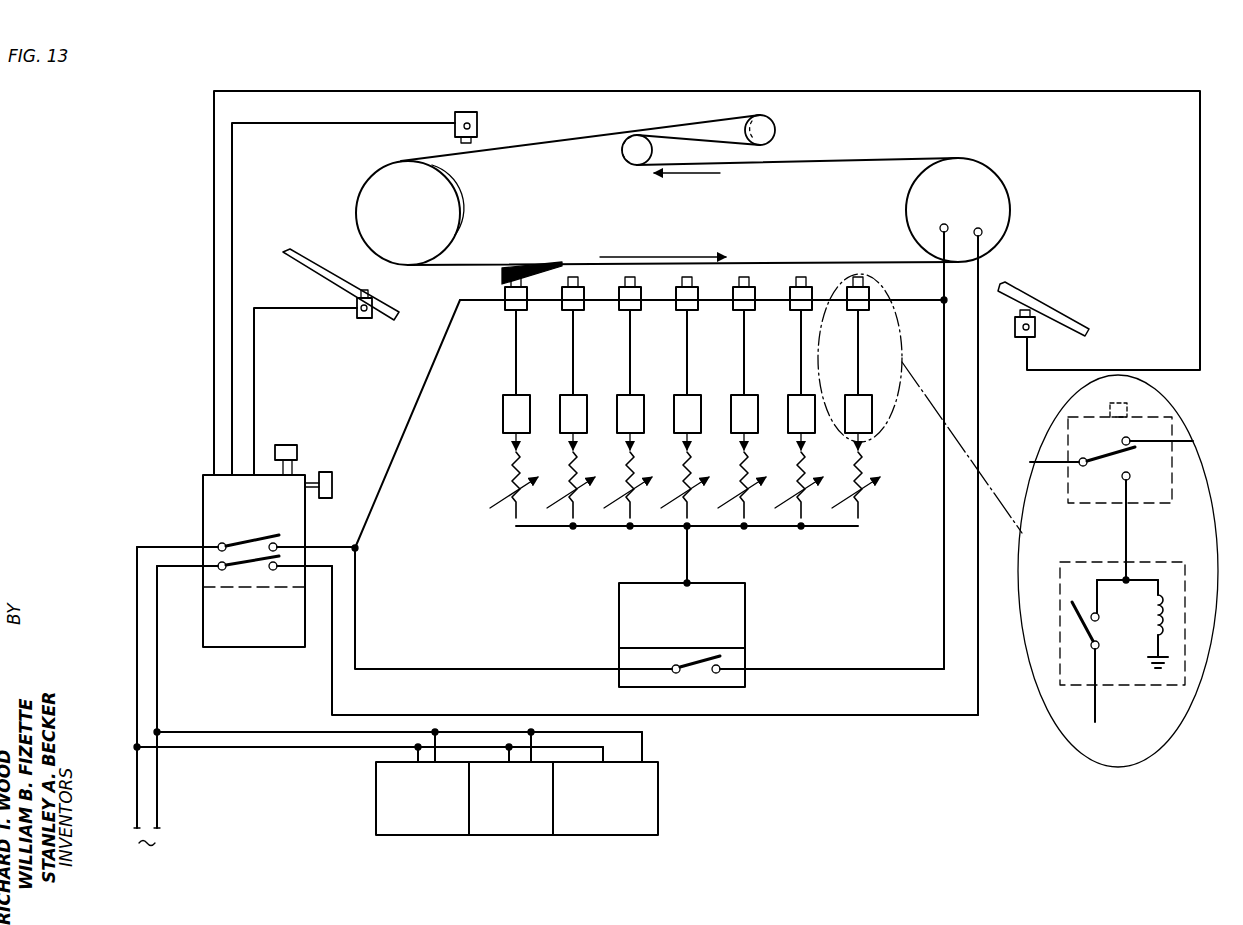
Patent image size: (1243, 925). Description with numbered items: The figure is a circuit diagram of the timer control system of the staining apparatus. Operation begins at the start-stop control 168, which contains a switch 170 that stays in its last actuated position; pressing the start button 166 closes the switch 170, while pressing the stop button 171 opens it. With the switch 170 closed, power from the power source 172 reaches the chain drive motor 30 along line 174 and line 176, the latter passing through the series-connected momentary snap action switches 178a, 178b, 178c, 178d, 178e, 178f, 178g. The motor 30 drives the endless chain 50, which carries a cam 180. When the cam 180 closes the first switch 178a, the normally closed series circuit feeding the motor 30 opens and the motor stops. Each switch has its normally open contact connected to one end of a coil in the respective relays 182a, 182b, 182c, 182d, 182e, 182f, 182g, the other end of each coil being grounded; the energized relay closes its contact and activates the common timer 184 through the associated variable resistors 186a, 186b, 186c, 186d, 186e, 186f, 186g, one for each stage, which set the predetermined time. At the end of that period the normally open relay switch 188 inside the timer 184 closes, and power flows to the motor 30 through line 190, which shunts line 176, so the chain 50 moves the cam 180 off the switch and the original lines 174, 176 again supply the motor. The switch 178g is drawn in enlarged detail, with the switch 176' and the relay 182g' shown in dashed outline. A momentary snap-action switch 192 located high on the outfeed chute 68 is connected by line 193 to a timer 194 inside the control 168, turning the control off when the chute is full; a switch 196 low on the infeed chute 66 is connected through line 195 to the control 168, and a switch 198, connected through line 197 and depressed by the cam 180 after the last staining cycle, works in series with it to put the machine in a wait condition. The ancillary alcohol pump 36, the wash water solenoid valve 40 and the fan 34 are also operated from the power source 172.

The line 193 is at (990, 98).
The line 197 is at (267, 128).
The momentary snap-action switch 198 is at (452, 134).
The endless chain 50 is at (848, 136).
The chain drive motor 30 is at (1012, 203).
The infeed chute 66 is at (312, 280).
The momentary snap-action switch 196 is at (360, 320).
The line 195 is at (254, 384).
The outfeed chute 68 is at (1082, 292).
The momentary snap-action switch 192 is at (1015, 338).
The cam 180 is at (500, 276).
The line 176 is at (649, 426).
The momentary snap action switch 178a is at (508, 314).
The momentary snap action switch 178b is at (566, 312).
The momentary snap action switch 178c is at (620, 310).
The momentary snap action switch 178d is at (678, 310).
The momentary snap action switch 178e is at (736, 310).
The momentary snap action switch 178f is at (794, 310).
The momentary snap action switch 178g is at (854, 310).
The relay 182a is at (512, 388).
The relay 182b is at (570, 388).
The relay 182c is at (627, 388).
The relay 182d is at (684, 388).
The relay 182e is at (741, 388).
The relay 182f is at (798, 388).
The relay 182g is at (845, 371).
The variable resistor 186a is at (492, 506).
The variable resistor 186b is at (555, 481).
The variable resistor 186c is at (615, 481).
The variable resistor 186d is at (671, 481).
The variable resistor 186e is at (729, 481).
The variable resistor 186f is at (786, 481).
The variable resistor 186g is at (844, 478).
The common timer 184 is at (740, 618).
The relay switch 188 is at (692, 674).
The line 190 is at (392, 667).
The start-stop control 168 is at (203, 497).
The switch 170 is at (248, 536).
The start button 166 is at (299, 456).
The stop button 171 is at (332, 484).
The timer 194 is at (203, 655).
The line 174 is at (332, 715).
The power source 172 is at (142, 850).
The solenoid valve 40 is at (380, 837).
The alcohol handling pump 36 is at (492, 832).
The fan 34 is at (600, 832).
The switch detail 176' is at (1118, 491).
The relay detail 182g' is at (1114, 627).